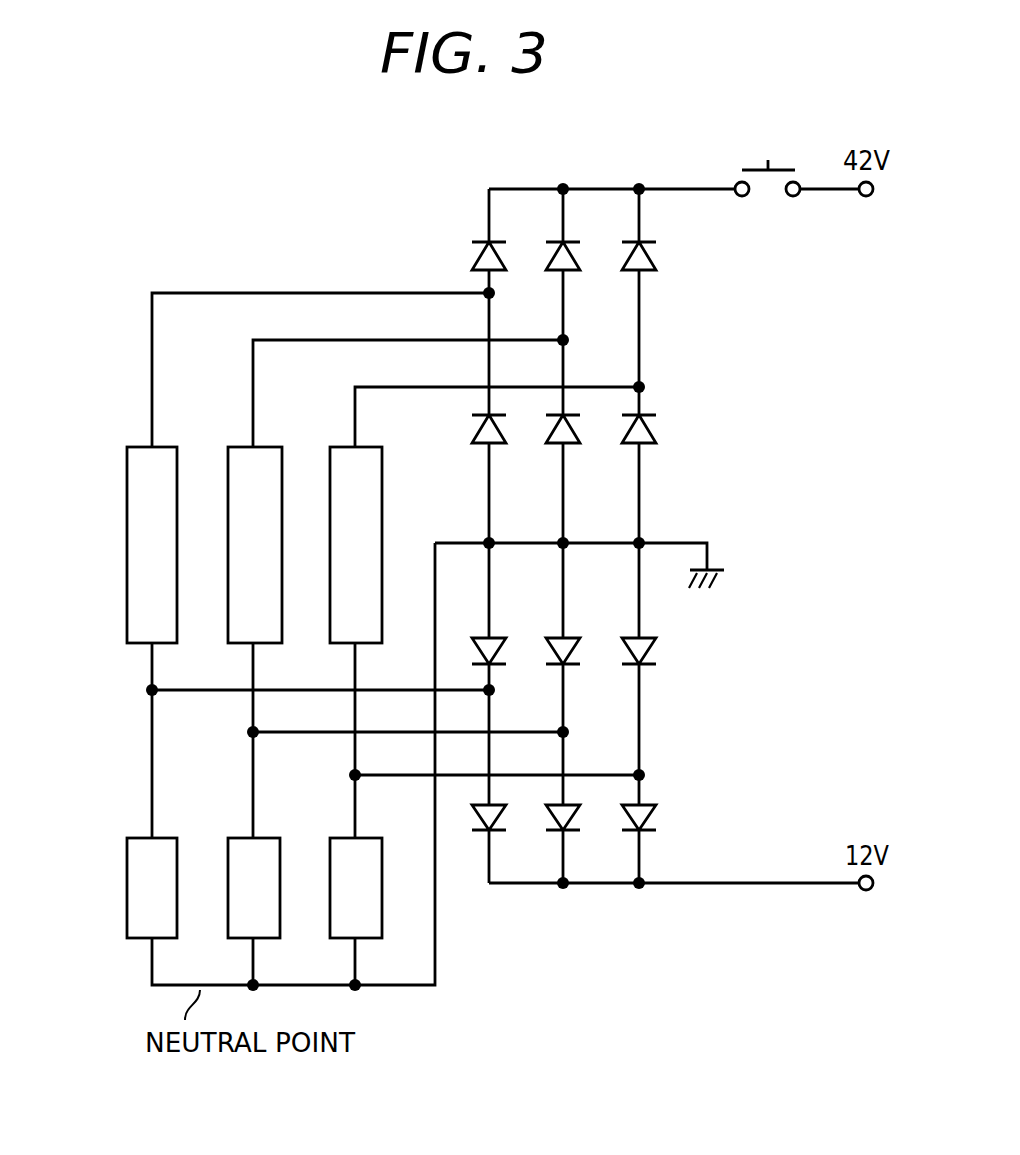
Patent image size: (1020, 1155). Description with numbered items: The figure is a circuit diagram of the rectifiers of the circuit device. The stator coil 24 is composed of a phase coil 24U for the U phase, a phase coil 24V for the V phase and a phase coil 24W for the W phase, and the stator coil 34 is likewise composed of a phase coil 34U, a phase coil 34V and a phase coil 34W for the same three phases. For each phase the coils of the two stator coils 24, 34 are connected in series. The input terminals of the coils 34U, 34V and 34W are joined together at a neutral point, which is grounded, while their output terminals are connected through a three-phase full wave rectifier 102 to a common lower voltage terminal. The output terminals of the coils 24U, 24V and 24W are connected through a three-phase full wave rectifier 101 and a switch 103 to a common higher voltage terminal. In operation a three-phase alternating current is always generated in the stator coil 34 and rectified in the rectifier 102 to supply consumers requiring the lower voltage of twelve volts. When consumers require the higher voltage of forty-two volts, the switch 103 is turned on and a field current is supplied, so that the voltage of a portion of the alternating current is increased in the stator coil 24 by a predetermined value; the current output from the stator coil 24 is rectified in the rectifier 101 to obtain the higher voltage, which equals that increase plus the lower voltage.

The stator coil 24 is at (248, 515).
The phase coil for a U phase 24U is at (168, 452).
The phase coil for a V phase 24V is at (273, 453).
The phase coil for a W phase 24W is at (373, 470).
The stator coil 34 is at (224, 860).
The phase coil for the U phase 34U is at (168, 845).
The phase coil for the V phase 34V is at (271, 845).
The phase coil for the W phase 34W is at (373, 848).
The three-phase full wave rectifier 101 is at (658, 360).
The three-phase full wave rectifier 102 is at (658, 693).
The switch 103 is at (768, 148).